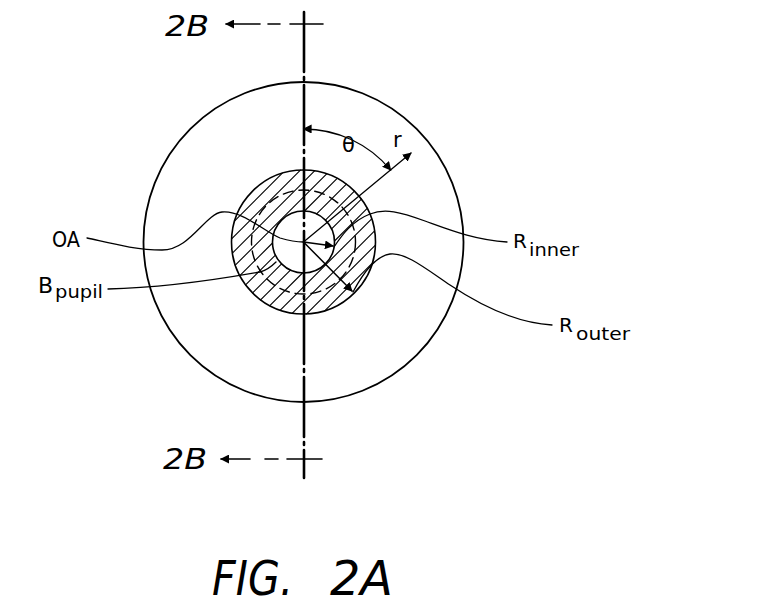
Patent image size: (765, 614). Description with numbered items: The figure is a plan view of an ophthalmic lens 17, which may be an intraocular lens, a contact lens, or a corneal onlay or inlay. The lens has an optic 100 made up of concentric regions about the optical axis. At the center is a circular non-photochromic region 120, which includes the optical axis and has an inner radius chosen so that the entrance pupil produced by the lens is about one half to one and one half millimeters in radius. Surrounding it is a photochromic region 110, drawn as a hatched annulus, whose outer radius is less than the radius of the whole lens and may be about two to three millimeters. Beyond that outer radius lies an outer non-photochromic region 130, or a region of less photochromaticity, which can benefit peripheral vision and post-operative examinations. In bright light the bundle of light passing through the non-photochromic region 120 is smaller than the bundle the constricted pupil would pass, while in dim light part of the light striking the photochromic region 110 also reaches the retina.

The optic 100 is at (177, 348).
The photochromic region 110 is at (240, 211).
The non-photochromic region 120 is at (297, 224).
The non-photochromic region 130 is at (197, 199).
The ophthalmic lens 17 is at (484, 136).